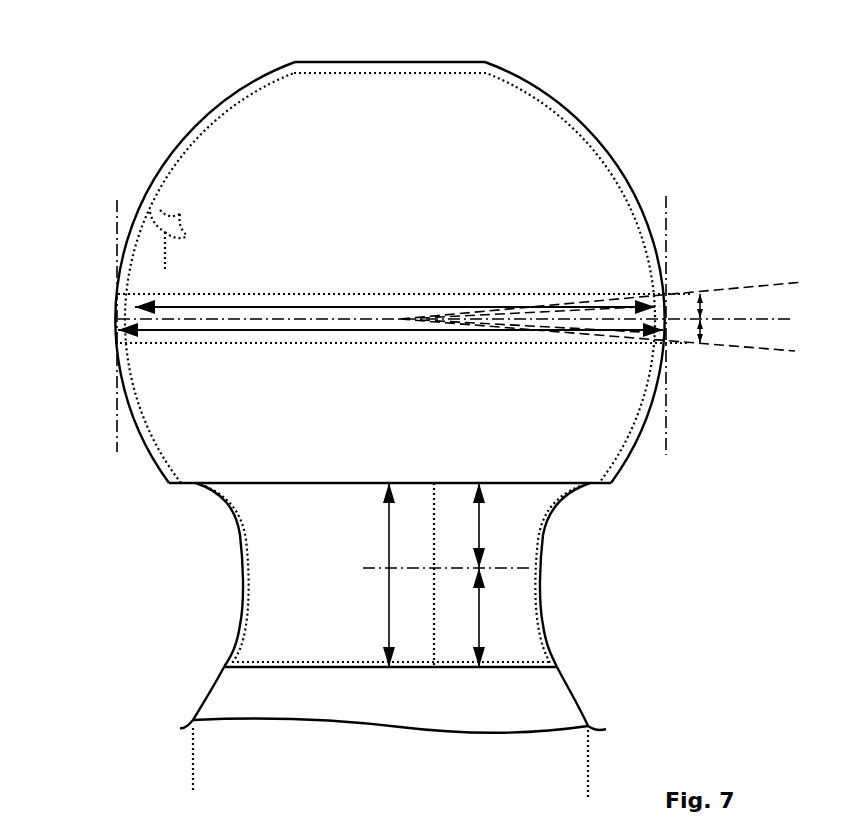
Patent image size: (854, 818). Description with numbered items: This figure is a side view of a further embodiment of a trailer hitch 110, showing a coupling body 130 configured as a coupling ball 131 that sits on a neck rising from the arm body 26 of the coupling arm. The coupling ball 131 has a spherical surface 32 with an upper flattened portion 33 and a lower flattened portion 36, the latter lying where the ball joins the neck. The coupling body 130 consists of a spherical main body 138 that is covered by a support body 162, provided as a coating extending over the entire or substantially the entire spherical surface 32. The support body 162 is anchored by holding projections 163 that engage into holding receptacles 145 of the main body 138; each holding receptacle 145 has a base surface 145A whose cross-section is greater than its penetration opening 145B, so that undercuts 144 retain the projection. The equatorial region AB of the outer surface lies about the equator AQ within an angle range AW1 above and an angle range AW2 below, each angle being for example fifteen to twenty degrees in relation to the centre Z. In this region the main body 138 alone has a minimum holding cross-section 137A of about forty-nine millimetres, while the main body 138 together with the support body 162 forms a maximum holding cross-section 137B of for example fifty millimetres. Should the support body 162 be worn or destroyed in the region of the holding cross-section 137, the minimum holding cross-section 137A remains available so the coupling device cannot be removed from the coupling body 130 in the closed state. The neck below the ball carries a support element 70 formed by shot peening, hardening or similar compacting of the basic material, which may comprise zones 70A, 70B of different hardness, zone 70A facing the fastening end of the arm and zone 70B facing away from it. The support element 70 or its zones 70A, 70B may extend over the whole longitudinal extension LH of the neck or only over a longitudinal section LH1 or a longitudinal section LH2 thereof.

The coupling body 130 is at (228, 84).
The flattened portion 33 is at (362, 62).
The spherical surface 32 is at (541, 99).
The coupling ball 131 is at (586, 128).
The trailer hitch 110 is at (666, 162).
The support body 162 is at (157, 180).
The penetration opening 145B is at (152, 210).
The holding projection 163 is at (165, 212).
The base surface 145A is at (182, 220).
The undercut 144 is at (188, 233).
The holding receptacle 145 is at (185, 264).
The holding cross-section 137 is at (118, 306).
The minimum holding cross-section 137A is at (318, 306).
The maximum holding cross-section 137B is at (303, 331).
The centre Z is at (387, 320).
The equatorial region AB is at (500, 294).
The equator AQ is at (586, 296).
The angle range AW1 is at (704, 306).
The angle range AW2 is at (704, 331).
The main body 138 is at (633, 447).
The flattened portion 36 is at (602, 485).
The support element 70 is at (544, 563).
The zone 70A is at (306, 586).
The zone 70B is at (530, 642).
The longitudinal extension LH is at (386, 558).
The longitudinal section LH1 is at (483, 544).
The longitudinal section LH2 is at (500, 616).
The arm body 26 is at (192, 737).